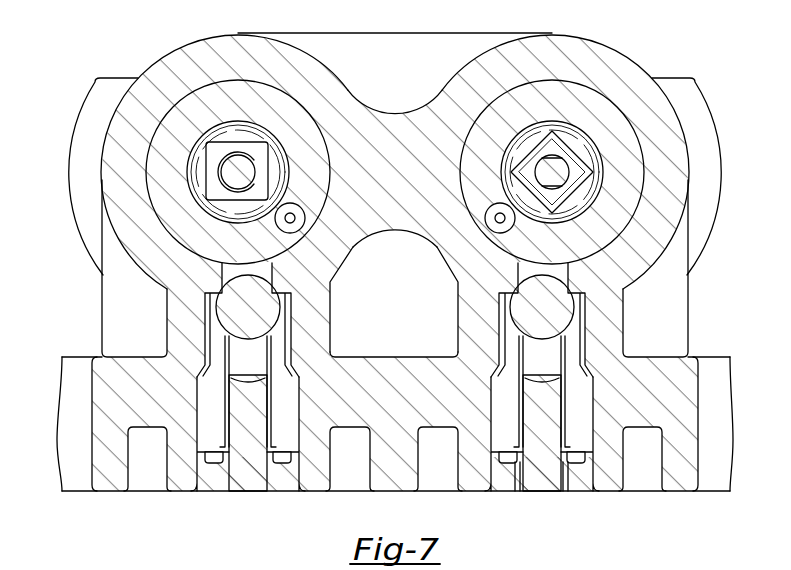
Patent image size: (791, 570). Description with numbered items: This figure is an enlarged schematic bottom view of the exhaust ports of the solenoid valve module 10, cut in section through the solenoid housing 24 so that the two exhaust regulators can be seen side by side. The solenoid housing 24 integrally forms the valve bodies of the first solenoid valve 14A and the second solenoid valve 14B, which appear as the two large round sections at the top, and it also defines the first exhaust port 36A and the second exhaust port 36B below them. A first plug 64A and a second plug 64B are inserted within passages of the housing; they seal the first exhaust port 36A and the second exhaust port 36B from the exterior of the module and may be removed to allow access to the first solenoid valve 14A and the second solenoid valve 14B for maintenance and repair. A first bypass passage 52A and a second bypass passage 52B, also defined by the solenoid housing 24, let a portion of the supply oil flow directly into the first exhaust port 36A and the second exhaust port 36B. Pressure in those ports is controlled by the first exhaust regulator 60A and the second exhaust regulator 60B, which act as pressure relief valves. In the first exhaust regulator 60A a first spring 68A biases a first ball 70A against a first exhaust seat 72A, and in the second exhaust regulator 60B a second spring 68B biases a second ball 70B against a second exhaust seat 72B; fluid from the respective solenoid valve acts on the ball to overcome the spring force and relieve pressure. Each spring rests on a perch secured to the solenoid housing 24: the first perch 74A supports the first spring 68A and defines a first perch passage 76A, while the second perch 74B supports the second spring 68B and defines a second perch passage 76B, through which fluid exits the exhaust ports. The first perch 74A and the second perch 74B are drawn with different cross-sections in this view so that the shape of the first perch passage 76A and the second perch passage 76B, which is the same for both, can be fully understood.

The solenoid valve module 10 is at (79, 43).
The first solenoid valve 14A is at (183, 60).
The second solenoid valve 14B is at (607, 60).
The solenoid housing 24 is at (122, 335).
The first exhaust port 36A is at (208, 430).
The second exhaust port 36B is at (592, 430).
The first bypass passage 52A is at (303, 217).
The second bypass passage 52B is at (484, 217).
The first exhaust regulator 60A is at (311, 384).
The second exhaust regulator 60B is at (479, 384).
The first plug 64A is at (150, 168).
The second plug 64B is at (640, 168).
The first spring 68A is at (225, 412).
The second spring 68B is at (565, 412).
The first ball 70A is at (237, 317).
The second ball 70B is at (557, 317).
The first exhaust seat 72A is at (280, 293).
The second exhaust seat 72B is at (510, 293).
The first perch 74A is at (265, 477).
The second perch 74B is at (538, 475).
The first perch passage 76A is at (216, 463).
The second perch passage 76B is at (517, 478).